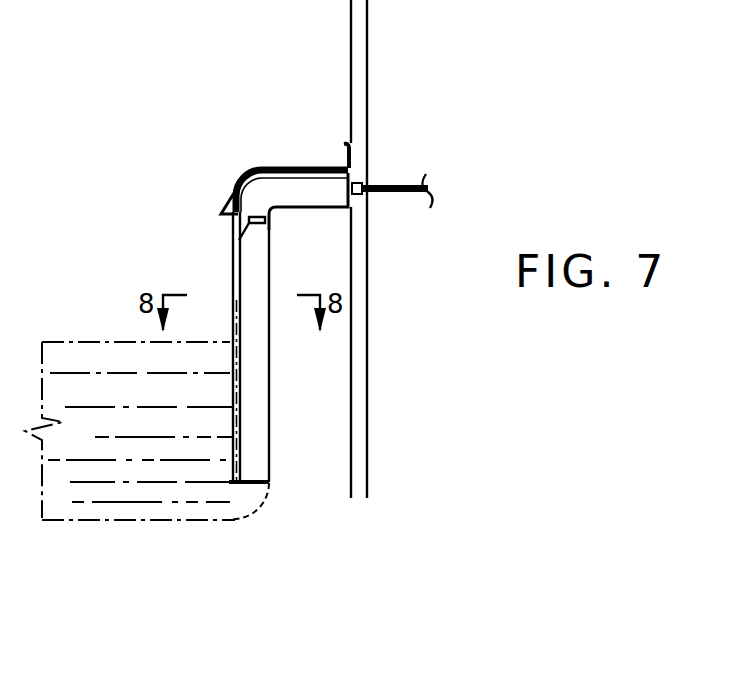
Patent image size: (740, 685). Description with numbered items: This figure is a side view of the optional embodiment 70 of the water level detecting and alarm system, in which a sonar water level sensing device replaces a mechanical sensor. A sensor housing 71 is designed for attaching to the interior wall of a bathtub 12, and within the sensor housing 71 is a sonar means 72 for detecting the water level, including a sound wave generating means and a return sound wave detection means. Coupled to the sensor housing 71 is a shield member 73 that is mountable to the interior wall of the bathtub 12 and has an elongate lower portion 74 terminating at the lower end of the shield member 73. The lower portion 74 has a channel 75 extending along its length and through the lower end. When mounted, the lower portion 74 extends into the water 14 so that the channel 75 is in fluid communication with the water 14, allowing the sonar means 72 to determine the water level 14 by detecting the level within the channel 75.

The optional embodiment 70 is at (215, 162).
The sensor housing 71 is at (303, 188).
The sonar means 72 is at (258, 224).
The shield member 73 is at (260, 166).
The lower portion 74 is at (232, 365).
The channel 75 is at (253, 302).
The water level 14 is at (130, 430).
The bathtub 12 is at (247, 517).